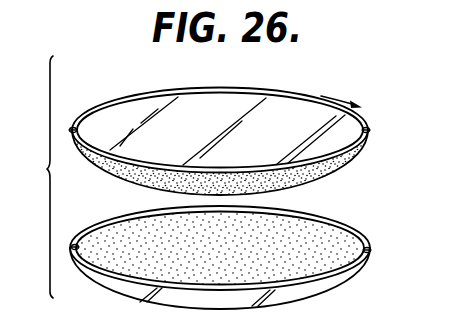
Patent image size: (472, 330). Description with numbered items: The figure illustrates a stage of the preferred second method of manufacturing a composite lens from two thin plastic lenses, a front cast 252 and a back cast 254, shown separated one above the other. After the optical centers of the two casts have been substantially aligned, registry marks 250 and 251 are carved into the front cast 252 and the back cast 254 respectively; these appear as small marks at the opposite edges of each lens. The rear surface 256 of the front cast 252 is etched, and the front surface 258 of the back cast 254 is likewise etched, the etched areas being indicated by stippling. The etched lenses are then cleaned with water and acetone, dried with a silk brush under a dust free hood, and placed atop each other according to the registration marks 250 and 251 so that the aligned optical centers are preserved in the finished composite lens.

The registry mark 250 is at (74, 127).
The registry mark 251 is at (77, 243).
The front cast 252 is at (339, 273).
The back cast 254 is at (273, 91).
The rear surface 256 is at (279, 221).
The front surface 258 is at (322, 171).